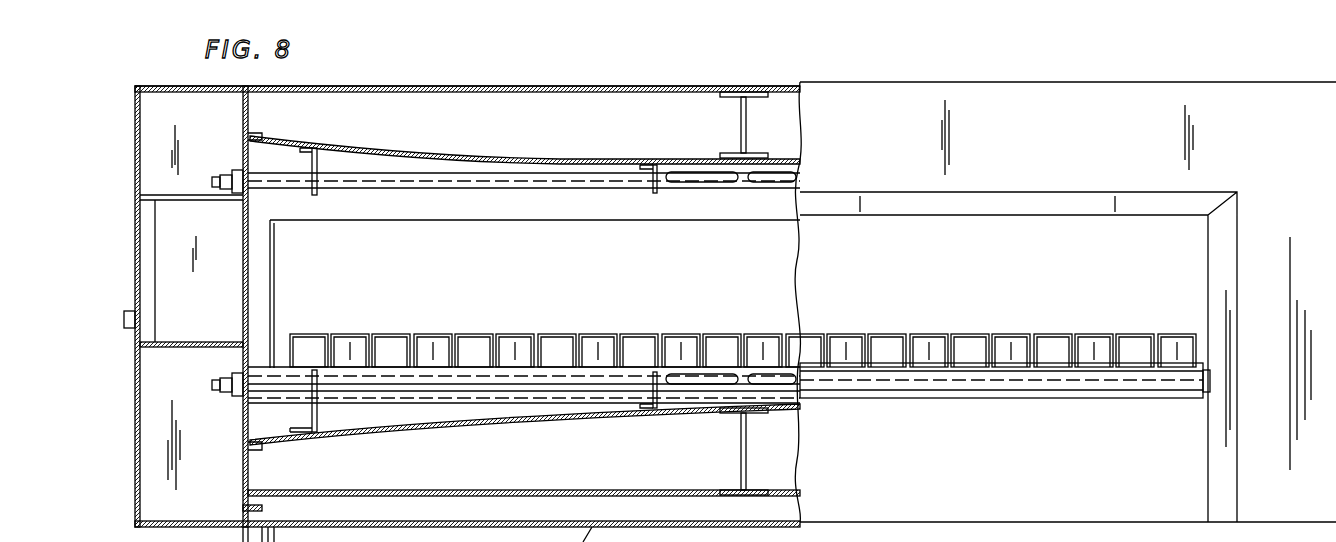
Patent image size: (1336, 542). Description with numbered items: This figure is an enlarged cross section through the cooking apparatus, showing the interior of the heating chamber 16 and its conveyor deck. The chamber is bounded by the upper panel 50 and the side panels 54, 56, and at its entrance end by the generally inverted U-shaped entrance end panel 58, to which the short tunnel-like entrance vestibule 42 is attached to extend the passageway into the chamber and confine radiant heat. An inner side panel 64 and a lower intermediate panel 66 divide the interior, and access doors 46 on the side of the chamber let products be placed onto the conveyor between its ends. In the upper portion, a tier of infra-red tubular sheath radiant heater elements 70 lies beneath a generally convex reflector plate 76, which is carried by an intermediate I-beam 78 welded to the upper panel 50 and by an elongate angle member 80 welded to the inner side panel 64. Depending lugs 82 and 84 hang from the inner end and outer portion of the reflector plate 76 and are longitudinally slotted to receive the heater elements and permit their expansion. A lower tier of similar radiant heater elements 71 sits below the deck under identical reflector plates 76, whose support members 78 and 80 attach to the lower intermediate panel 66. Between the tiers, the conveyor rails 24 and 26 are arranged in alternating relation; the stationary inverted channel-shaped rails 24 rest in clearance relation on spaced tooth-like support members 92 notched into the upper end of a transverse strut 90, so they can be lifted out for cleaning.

The heating chamber 16 is at (520, 86).
The upper panel 50 is at (653, 86).
The side panel 54 is at (1335, 79).
The side panel 56 is at (137, 168).
The entrance end panel 58 is at (1026, 128).
The access door 46 is at (136, 277).
The inner side panel 64 is at (243, 300).
The elongate angle member 80 is at (255, 137).
The radiant heater element 70 is at (447, 172).
The radiant heater element 71 is at (478, 410).
The reflector plate 76 is at (537, 157).
The intermediate I-beam 78 is at (738, 132).
The depending lug 84 is at (320, 165).
The depending lug 82 is at (650, 189).
The entrance vestibule 42 is at (1020, 216).
The rail 24 is at (310, 334).
The rail 26 is at (370, 334).
The tooth-like support member 92 is at (884, 348).
The transverse strut 90 is at (986, 454).
The lower intermediate panel 66 is at (442, 492).